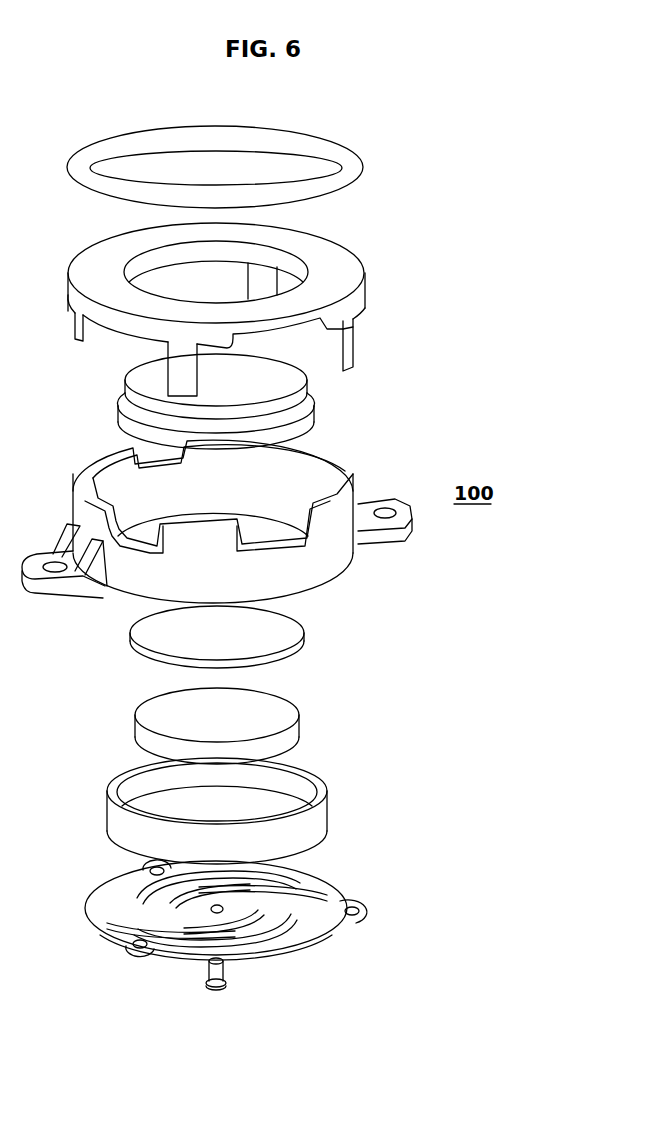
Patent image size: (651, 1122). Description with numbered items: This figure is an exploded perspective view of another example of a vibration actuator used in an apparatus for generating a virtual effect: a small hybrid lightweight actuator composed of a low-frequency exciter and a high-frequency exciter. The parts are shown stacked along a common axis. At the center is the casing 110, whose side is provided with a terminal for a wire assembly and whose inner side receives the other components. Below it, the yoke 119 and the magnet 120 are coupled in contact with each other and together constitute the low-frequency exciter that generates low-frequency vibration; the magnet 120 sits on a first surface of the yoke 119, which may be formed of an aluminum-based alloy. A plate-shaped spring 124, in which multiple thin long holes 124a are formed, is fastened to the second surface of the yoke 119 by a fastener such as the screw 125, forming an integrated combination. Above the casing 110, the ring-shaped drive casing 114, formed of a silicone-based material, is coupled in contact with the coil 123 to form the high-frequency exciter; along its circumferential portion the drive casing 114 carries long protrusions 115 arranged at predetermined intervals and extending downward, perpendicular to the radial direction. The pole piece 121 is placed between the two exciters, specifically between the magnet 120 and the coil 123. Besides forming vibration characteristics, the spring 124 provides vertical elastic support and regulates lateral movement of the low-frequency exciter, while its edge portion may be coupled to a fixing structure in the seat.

The drive casing 114 is at (338, 259).
The protrusions 115 is at (353, 353).
The coil 123 is at (317, 409).
The casing 110 is at (342, 559).
The pole piece 121 is at (305, 638).
The magnet 120 is at (285, 734).
The yoke 119 is at (318, 814).
The spring 124 is at (263, 915).
The thin long holes 124a is at (330, 901).
The screw 125 is at (228, 973).